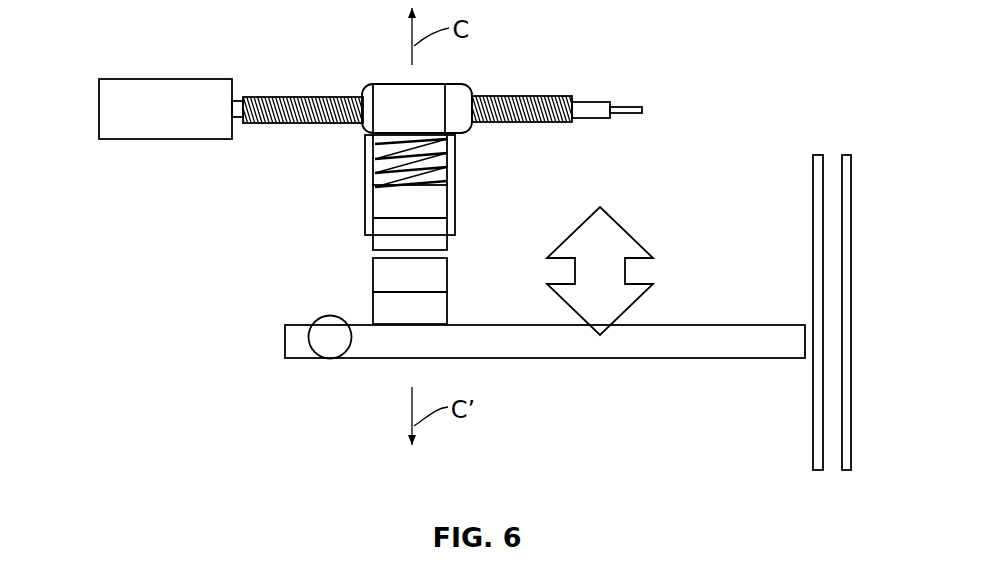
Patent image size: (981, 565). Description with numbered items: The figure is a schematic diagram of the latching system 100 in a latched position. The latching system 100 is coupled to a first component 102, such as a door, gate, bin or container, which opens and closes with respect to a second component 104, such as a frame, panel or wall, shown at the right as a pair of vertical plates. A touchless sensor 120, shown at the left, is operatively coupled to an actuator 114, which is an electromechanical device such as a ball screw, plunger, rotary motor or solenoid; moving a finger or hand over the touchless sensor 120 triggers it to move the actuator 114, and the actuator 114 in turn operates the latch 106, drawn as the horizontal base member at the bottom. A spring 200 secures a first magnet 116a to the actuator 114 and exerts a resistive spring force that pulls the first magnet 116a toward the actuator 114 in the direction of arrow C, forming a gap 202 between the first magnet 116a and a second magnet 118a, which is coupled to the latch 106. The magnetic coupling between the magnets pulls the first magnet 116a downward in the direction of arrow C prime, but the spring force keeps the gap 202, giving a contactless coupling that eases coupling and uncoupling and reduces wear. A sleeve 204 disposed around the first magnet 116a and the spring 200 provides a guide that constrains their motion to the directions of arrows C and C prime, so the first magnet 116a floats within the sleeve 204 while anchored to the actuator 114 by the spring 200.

The latching system 100 is at (70, 112).
The first component 102 is at (161, 320).
The second component 104 is at (854, 295).
The latch 106 is at (470, 364).
The actuator 114 is at (330, 97).
The first magnet 116a is at (383, 228).
The second magnet 118a is at (447, 292).
The touchless sensor 120 is at (165, 79).
The spring 200 is at (440, 140).
The gap 202 is at (375, 255).
The sleeve 204 is at (455, 148).